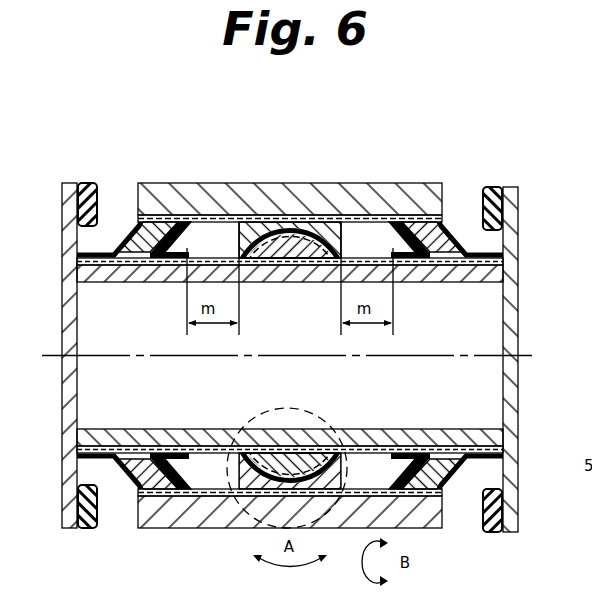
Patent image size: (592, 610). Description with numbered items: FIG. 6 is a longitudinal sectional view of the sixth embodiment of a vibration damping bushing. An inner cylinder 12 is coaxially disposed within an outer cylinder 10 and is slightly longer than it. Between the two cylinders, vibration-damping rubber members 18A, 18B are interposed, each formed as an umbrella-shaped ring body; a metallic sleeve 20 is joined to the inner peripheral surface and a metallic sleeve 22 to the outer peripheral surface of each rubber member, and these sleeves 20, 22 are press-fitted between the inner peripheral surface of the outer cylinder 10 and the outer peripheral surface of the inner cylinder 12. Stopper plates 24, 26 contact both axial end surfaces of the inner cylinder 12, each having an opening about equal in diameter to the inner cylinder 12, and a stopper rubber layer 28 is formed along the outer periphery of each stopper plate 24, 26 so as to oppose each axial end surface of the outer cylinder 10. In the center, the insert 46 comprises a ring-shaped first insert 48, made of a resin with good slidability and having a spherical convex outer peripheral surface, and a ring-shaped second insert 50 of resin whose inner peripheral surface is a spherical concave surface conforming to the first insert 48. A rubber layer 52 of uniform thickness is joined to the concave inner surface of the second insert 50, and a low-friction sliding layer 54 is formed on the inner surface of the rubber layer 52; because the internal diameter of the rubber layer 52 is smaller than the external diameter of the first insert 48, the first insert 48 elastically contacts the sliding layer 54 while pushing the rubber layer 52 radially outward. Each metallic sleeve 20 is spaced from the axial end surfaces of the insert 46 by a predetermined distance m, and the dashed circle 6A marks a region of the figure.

The outer cylinder 10 is at (250, 197).
The inner cylinder 12 is at (102, 283).
The vibration-damping rubber member 18A is at (133, 236).
The vibration-damping rubber member 18B is at (433, 243).
The metallic sleeve 20 is at (147, 283).
The metallic sleeve 22 is at (173, 220).
The stopper plate 24 is at (68, 183).
The stopper plate 26 is at (518, 222).
The stopper rubber layer 28 is at (87, 182).
The insert 46 is at (229, 241).
The first insert 48 is at (311, 263).
The second insert 50 is at (323, 231).
The rubber layer 52 is at (280, 232).
The sliding layer 54 is at (273, 265).
The detail region shown in FIG. 6A is at (240, 537).